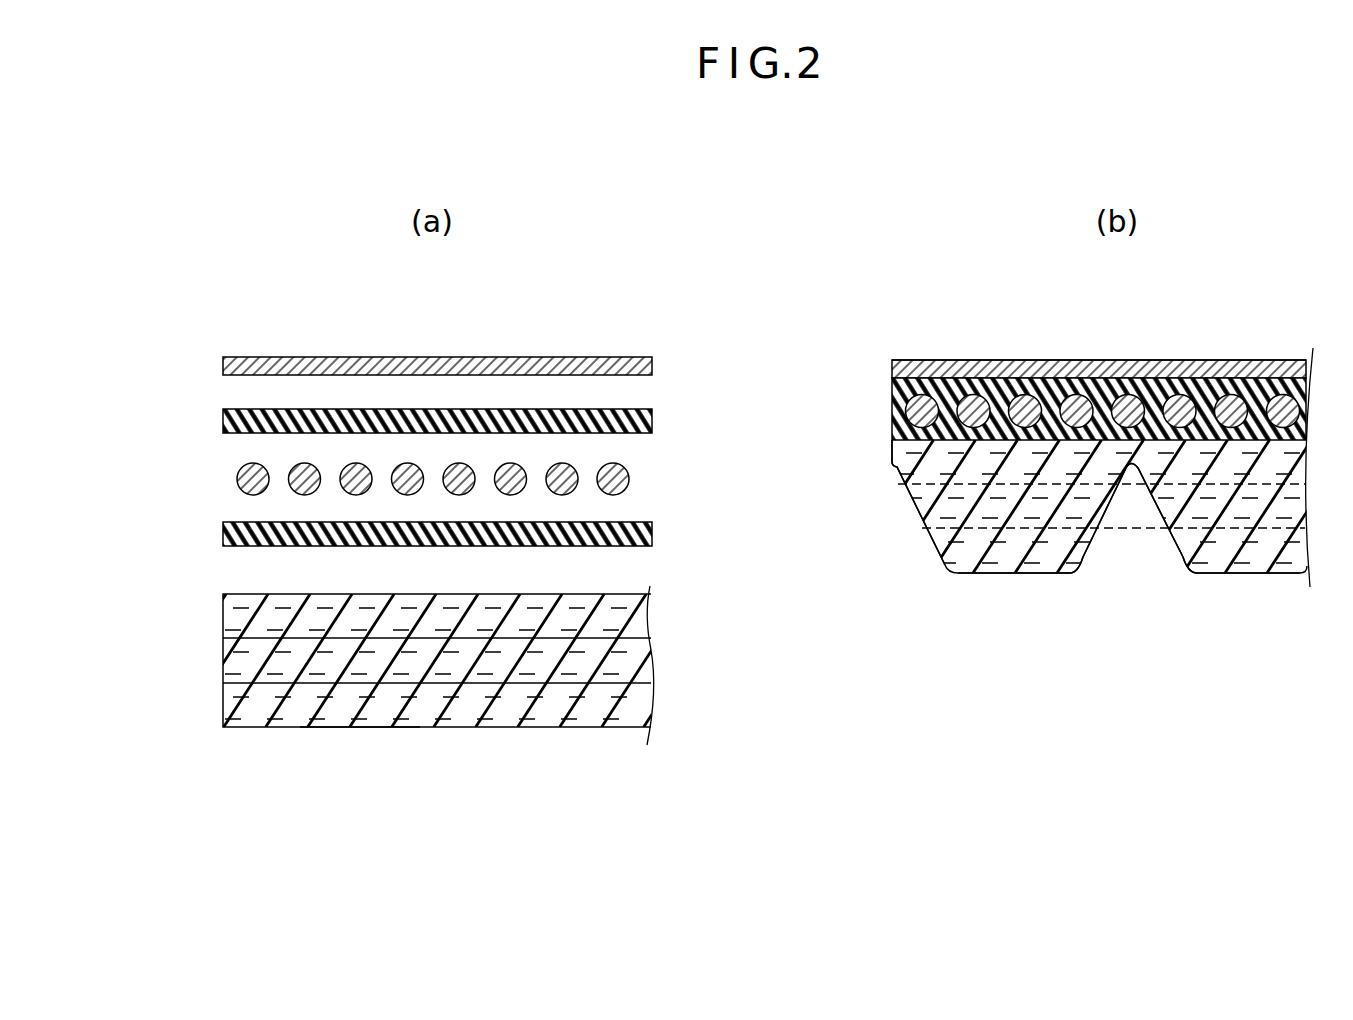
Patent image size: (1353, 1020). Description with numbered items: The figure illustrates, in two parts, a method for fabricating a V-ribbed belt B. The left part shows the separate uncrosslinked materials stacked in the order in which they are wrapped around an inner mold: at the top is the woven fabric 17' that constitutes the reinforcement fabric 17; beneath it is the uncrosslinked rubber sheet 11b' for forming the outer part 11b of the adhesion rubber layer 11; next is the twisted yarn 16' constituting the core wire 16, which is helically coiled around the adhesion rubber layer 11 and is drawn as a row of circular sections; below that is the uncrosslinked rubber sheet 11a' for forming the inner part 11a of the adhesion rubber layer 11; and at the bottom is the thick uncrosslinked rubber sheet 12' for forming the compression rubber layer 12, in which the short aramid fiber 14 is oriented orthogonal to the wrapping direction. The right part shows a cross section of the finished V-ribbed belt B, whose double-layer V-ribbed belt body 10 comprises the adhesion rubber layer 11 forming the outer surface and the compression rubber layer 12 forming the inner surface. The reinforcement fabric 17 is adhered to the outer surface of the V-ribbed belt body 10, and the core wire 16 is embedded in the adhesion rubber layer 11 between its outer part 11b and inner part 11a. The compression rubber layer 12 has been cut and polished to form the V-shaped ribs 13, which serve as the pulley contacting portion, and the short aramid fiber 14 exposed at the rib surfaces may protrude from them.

The woven fabric 17' is at (395, 363).
The uncrosslinked rubber sheet 11b' is at (386, 421).
The twisted yarn 16' is at (384, 479).
The uncrosslinked rubber sheet 11a' is at (386, 534).
The uncrosslinked rubber sheet 12' is at (414, 665).
The short aramid fiber 14 is at (380, 718).
The V-ribbed belt B is at (1222, 336).
The reinforcement fabric 17 is at (1059, 363).
The adhesion rubber layer 11 is at (803, 380).
The outer part of the adhesion rubber layer 11b is at (1054, 396).
The inner part of the adhesion rubber layer 11a is at (1055, 429).
The core wire 16 is at (1103, 374).
The V-ribbed belt body 10 is at (913, 509).
The compression rubber layer 12 is at (1100, 510).
The V-shaped ribs 13 is at (1047, 568).